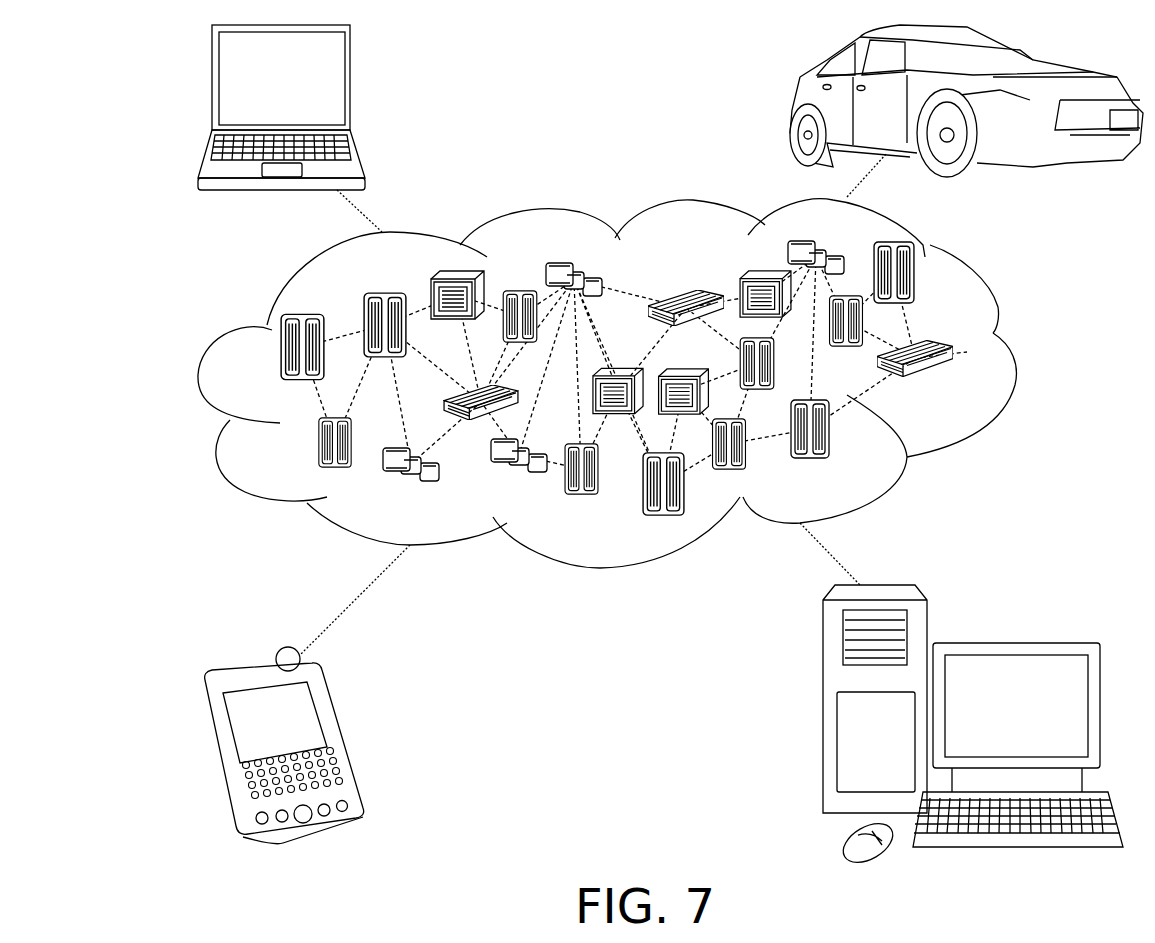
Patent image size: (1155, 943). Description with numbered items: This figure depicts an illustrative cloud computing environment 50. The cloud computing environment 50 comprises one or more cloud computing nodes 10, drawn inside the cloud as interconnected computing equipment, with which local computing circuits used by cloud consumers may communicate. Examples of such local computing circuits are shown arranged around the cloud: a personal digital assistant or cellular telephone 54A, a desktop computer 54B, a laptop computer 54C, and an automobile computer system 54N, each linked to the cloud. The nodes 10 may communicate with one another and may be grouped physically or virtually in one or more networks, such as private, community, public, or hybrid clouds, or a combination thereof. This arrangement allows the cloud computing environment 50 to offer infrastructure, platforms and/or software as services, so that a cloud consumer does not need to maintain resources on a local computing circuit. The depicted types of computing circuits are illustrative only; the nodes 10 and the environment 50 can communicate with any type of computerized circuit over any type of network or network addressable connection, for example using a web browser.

The cloud computing node 10 is at (955, 387).
The cloud computing environment 50 is at (636, 383).
The personal digital assistant (PDA) or cellular telephone 54A is at (342, 735).
The desktop computer 54B is at (1010, 640).
The laptop computer 54C is at (352, 88).
The automobile computer system 54N is at (797, 105).